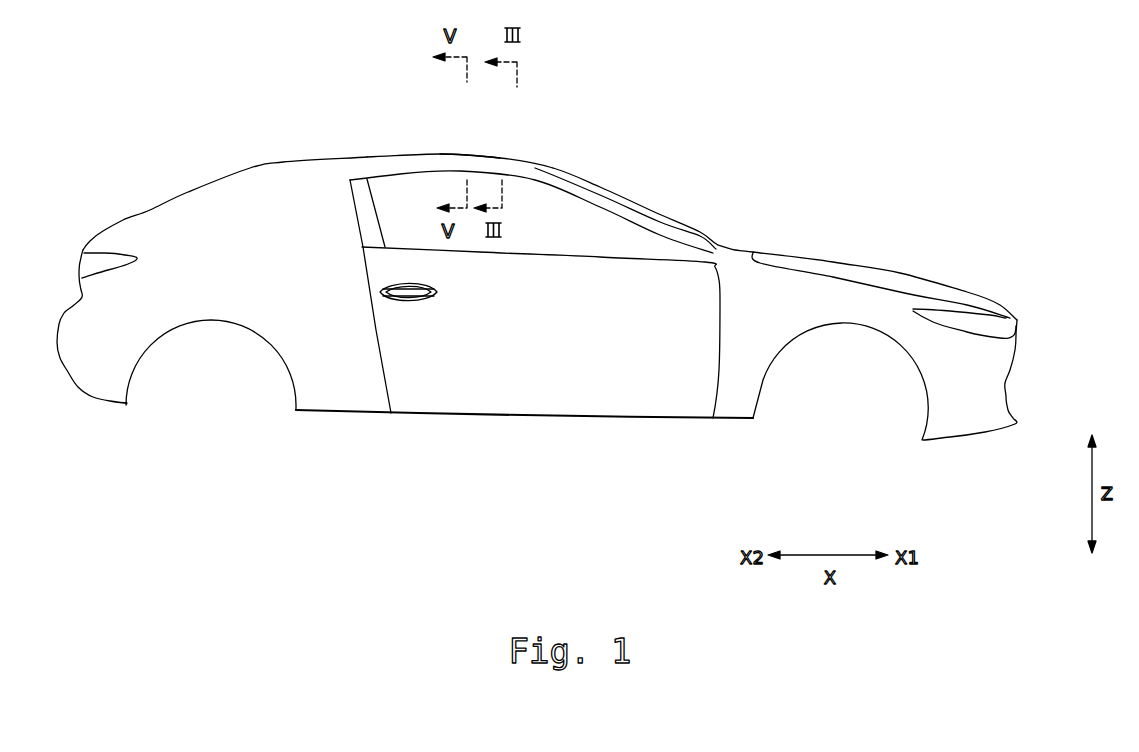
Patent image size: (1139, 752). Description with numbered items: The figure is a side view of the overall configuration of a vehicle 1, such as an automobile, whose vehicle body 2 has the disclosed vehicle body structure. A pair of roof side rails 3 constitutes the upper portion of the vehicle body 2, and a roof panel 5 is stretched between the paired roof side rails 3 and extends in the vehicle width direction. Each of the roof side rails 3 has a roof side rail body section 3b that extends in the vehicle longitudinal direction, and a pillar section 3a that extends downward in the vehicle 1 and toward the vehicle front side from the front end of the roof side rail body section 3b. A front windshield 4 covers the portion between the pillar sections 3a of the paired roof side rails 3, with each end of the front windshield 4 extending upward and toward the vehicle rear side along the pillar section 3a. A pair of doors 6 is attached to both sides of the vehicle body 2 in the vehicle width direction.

The vehicle 1 is at (883, 192).
The vehicle body 2 is at (985, 363).
The roof side rails 3 is at (498, 157).
The pillar section 3a is at (718, 246).
The roof side rail body section 3b is at (475, 157).
The front windshield 4 is at (700, 230).
The roof panel 5 is at (442, 153).
The doors 6 is at (558, 393).